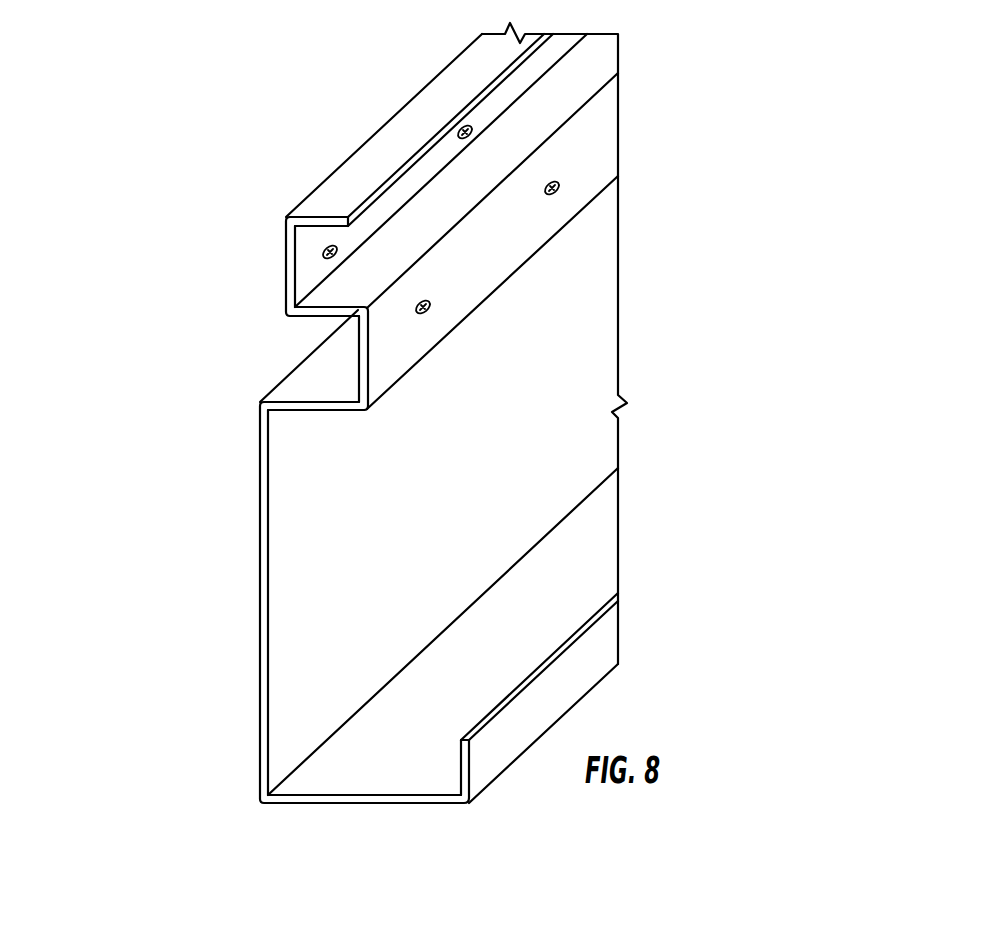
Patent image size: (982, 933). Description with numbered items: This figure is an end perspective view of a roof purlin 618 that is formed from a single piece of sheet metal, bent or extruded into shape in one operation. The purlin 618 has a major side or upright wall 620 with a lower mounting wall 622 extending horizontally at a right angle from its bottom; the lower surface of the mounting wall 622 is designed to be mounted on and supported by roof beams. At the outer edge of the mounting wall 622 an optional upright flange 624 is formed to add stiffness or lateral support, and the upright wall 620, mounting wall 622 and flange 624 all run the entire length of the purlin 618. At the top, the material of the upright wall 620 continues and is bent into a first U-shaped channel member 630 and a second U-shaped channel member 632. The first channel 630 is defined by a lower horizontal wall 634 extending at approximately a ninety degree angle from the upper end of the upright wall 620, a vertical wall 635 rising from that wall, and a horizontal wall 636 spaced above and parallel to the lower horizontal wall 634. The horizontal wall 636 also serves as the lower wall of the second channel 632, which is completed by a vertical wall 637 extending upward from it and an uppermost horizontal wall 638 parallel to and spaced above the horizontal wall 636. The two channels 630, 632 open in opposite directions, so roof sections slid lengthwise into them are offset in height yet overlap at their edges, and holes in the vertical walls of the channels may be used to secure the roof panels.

The purlin 618 is at (77, 317).
The upright wall 620 is at (262, 643).
The mounting wall 622 is at (410, 805).
The upright flange 624 is at (460, 769).
The first U-shaped channel member 630 is at (268, 340).
The second U-shaped channel member 632 is at (582, 76).
The lower horizontal wall 634 is at (298, 407).
The vertical wall 635 is at (392, 370).
The horizontal wall 636 is at (343, 313).
The vertical wall 637 is at (284, 259).
The horizontal wall 638 is at (403, 132).